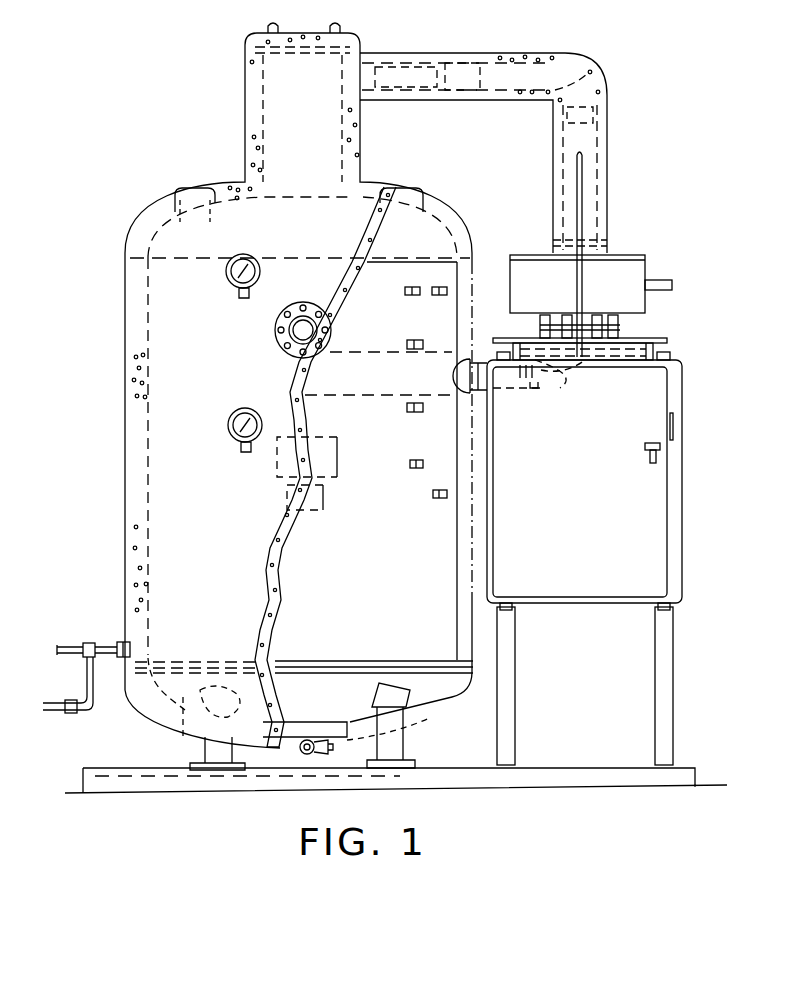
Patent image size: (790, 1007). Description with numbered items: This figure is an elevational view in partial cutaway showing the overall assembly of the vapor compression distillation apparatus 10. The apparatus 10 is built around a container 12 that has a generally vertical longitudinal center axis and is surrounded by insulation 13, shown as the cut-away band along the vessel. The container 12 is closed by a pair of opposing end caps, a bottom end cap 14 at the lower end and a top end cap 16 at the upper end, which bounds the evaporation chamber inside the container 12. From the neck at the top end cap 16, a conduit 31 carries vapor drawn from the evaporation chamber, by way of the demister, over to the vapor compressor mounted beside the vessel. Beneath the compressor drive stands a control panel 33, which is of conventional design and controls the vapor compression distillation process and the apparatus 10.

The vapor compression distillation apparatus 10 is at (99, 172).
The container 12 is at (148, 457).
The insulation 13 is at (281, 553).
The bottom end cap 14 is at (173, 703).
The top end cap 16 is at (150, 245).
The conduit 31 is at (598, 82).
The control panel 33 is at (690, 500).